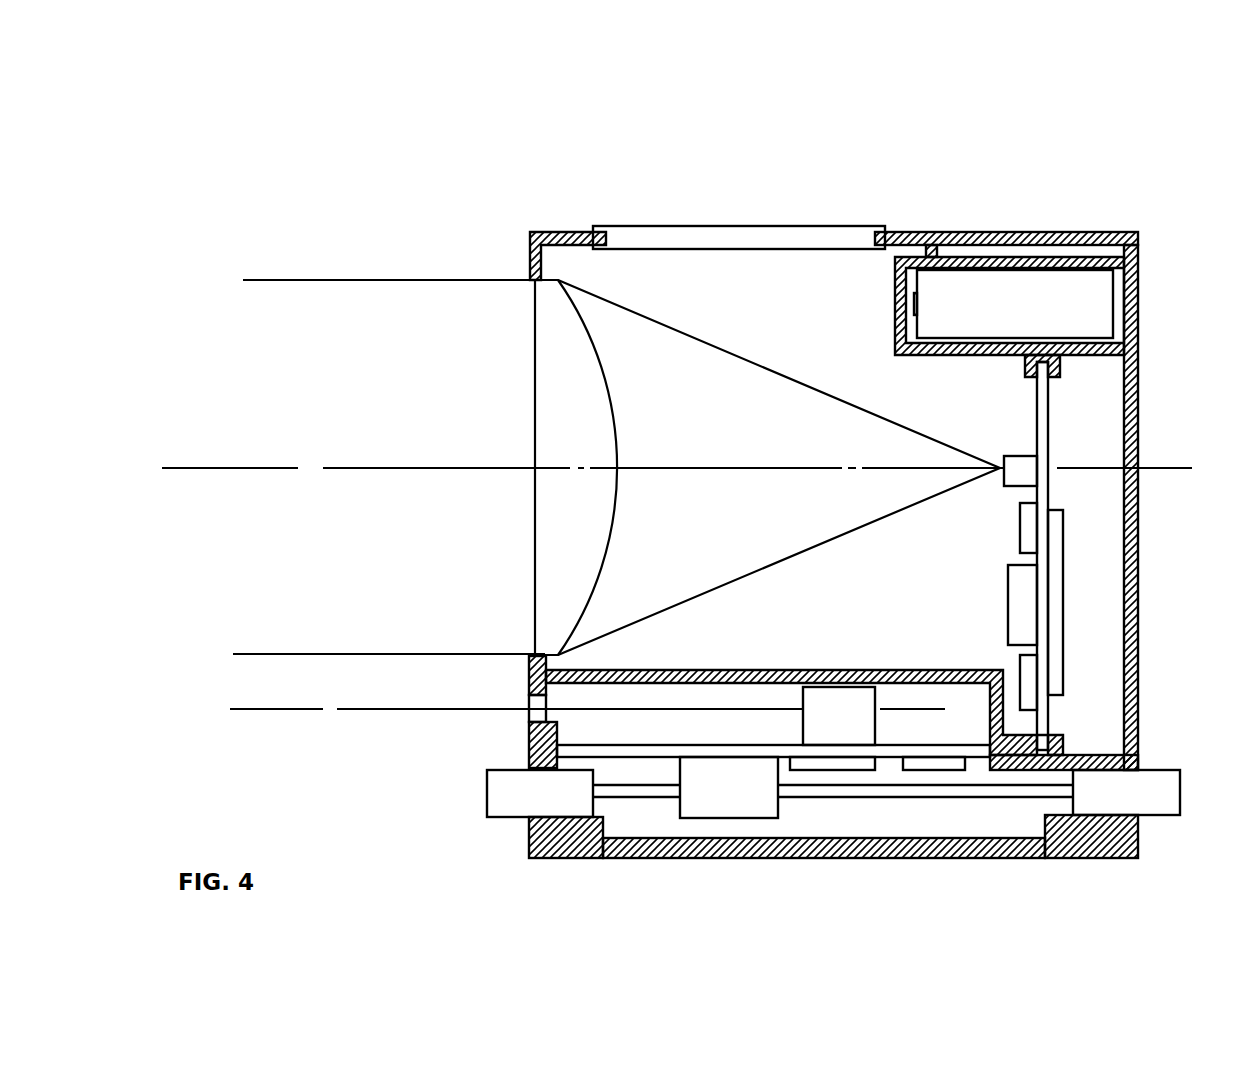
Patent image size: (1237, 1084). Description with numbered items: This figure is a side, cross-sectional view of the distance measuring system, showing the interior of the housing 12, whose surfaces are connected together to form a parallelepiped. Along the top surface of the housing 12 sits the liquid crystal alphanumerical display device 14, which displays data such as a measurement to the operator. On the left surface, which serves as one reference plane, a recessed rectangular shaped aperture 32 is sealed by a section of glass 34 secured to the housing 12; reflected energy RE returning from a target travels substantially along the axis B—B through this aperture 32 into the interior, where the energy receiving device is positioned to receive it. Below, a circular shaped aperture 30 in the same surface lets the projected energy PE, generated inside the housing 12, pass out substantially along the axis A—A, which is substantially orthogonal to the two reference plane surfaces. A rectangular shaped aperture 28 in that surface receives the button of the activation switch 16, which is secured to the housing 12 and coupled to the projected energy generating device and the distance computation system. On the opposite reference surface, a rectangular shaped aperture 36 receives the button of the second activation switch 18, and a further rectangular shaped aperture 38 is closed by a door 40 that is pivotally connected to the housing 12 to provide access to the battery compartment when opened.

The housing 12 is at (990, 232).
The alphanumerical display device 14 is at (790, 228).
The activation switch 16 is at (487, 797).
The activation switch 18 is at (1168, 790).
The rectangular shaped aperture 28 is at (525, 820).
The circular shaped aperture 30 is at (537, 702).
The recessed rectangular shaped aperture 32 is at (512, 374).
The section of glass 34 is at (535, 550).
The rectangular shaped aperture 36 is at (1138, 817).
The rectangular shaped aperture 38 is at (1138, 347).
The door 40 is at (1138, 275).
The reflected energy RE is at (357, 470).
The projected energy PE is at (352, 711).